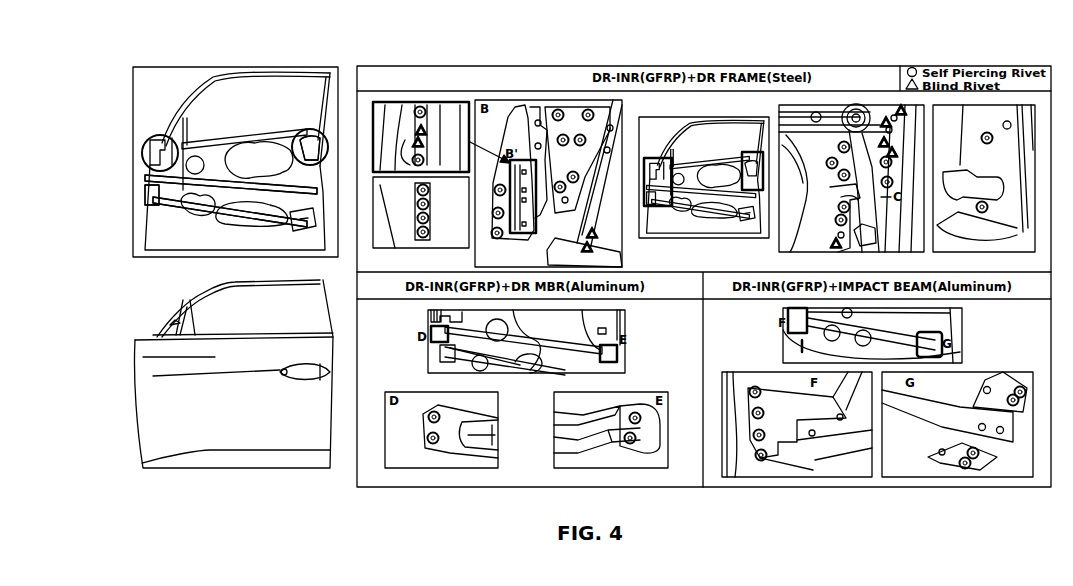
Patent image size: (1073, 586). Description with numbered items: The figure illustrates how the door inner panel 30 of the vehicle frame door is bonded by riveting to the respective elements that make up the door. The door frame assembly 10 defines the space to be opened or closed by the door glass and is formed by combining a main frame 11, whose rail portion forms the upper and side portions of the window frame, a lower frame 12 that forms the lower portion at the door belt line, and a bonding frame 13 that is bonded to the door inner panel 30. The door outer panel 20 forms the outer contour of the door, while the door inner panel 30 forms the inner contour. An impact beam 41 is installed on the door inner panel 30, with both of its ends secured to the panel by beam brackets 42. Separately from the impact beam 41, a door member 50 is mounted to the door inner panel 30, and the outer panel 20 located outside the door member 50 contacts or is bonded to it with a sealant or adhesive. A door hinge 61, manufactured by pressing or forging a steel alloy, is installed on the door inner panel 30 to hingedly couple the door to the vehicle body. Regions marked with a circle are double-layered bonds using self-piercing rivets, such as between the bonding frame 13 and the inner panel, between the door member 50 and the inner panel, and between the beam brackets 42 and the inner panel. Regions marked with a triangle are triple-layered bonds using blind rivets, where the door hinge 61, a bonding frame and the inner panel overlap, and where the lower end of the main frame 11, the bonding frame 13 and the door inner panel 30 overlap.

The door frame assembly 10 is at (293, 71).
The main frame 11 is at (253, 80).
The lower frame 12 is at (238, 133).
The bonding frame 13 is at (312, 157).
The door outer panel 20 is at (243, 417).
The door inner panel 30 is at (193, 153).
The impact beam 41 is at (212, 207).
The beam bracket 42 is at (162, 203).
The door member 50 is at (257, 187).
The door hinge 61 is at (406, 105).